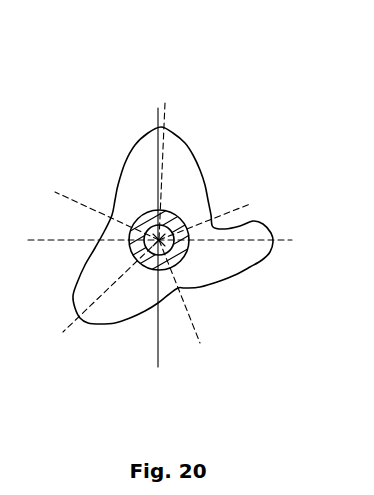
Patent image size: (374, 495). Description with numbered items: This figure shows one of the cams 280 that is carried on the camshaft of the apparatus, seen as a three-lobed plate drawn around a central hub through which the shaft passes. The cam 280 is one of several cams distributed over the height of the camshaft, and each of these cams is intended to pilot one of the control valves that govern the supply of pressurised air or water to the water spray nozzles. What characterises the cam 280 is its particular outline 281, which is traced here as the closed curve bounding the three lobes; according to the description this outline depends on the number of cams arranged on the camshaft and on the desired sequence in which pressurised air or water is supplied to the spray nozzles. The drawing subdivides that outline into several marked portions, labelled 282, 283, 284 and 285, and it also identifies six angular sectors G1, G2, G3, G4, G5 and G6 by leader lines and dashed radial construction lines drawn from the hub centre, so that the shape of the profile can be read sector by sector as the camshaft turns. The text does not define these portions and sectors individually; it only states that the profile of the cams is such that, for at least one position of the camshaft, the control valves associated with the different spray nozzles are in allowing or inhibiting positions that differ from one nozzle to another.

The cam 280 is at (177, 132).
The outline 281 is at (203, 165).
The concave transition region 282 is at (112, 213).
The lobe tip region 283 is at (160, 127).
The lobe flank region 284 is at (132, 151).
The lobe top region 285 is at (255, 222).
The gradient region 1 G1 is at (225, 239).
The gradient region 2 G2 is at (193, 326).
The gradient region 3 G3 is at (88, 303).
The gradient region 4 G4 is at (75, 200).
The gradient region 5 G5 is at (160, 174).
The gradient region 6 G6 is at (256, 205).